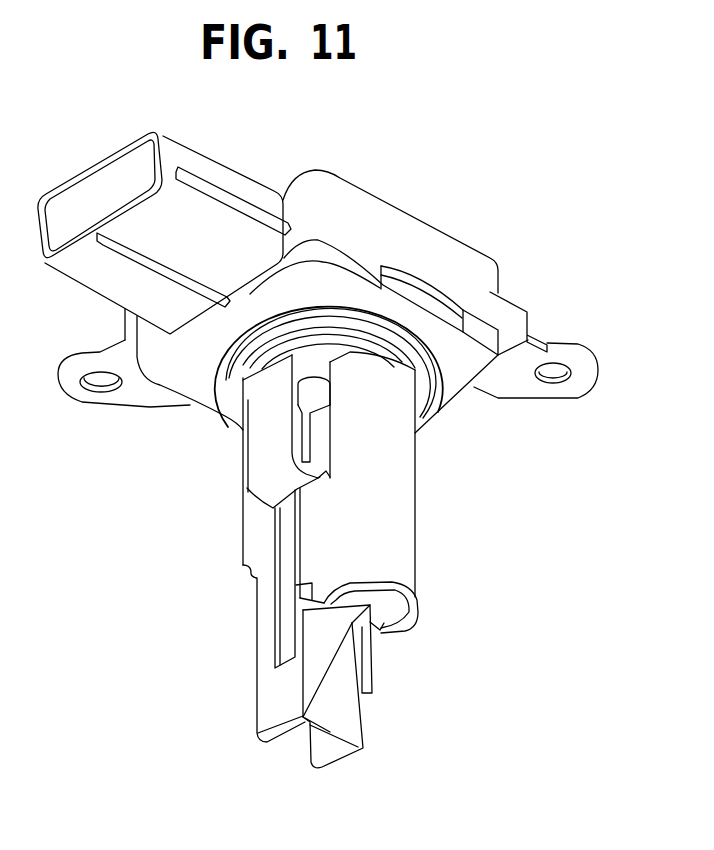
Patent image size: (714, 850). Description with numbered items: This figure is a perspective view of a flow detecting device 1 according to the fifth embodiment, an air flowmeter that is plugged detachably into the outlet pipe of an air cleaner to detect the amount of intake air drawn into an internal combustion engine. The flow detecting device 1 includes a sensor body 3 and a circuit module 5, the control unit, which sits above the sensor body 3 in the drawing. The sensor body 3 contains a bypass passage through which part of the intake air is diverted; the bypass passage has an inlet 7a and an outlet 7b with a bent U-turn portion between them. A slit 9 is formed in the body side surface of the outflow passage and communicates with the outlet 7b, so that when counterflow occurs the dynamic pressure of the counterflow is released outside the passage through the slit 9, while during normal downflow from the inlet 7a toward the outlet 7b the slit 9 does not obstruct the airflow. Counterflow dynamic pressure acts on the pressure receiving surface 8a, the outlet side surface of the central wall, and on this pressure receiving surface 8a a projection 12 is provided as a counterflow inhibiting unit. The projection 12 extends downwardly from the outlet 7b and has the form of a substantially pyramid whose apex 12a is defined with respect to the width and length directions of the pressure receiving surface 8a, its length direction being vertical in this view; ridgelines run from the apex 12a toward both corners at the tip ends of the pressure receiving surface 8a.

The flow detecting device 1 is at (348, 158).
The sensor body 3 is at (396, 492).
The circuit module 5 is at (424, 248).
The inlet 7a is at (300, 742).
The outlet 7b is at (386, 613).
The pressure receiving surface 8a is at (353, 622).
The slit 9 is at (308, 598).
The projection 12 is at (349, 705).
The apex 12a is at (378, 599).